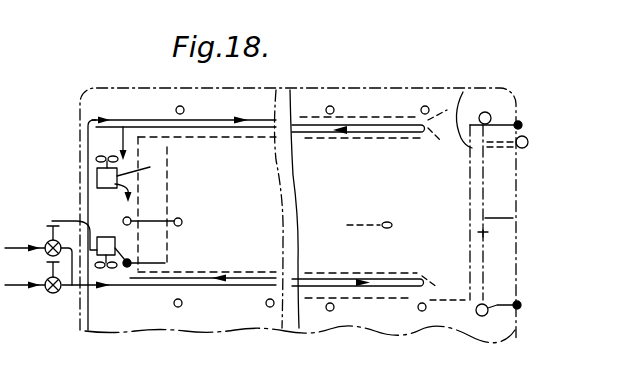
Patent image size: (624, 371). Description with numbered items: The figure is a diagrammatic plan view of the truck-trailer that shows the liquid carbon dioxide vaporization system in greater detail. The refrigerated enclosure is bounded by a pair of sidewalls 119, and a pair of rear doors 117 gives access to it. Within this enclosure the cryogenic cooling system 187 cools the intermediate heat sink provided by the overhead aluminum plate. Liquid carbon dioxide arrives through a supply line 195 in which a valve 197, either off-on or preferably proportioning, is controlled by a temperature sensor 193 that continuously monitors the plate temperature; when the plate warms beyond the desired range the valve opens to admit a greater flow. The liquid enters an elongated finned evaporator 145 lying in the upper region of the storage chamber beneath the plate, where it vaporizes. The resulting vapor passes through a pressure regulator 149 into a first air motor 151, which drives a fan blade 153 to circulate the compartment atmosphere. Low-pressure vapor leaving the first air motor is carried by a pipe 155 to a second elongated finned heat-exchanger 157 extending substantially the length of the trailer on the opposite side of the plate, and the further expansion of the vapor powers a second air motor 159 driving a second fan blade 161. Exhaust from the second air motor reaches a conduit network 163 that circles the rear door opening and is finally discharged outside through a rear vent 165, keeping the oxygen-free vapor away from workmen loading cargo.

The rear doors 117 is at (476, 236).
The sidewalls 119 is at (2, 106).
The elongated finned evaporator 145 is at (250, 276).
The pressure regulator 149 is at (130, 262).
The first air motor 151 is at (57, 227).
The fan blade 153 is at (125, 268).
The pipe 155 is at (96, 160).
The second elongated finned heat-exchanger 157 is at (257, 120).
The second air motor 159 is at (150, 167).
The second fan blade 161 is at (97, 105).
The conduit network 163 is at (471, 78).
The rear vent 165 is at (524, 136).
The cryogenic cooling system 187 is at (58, 203).
The temperature sensor 193 is at (388, 222).
The CO2 supply line 195 is at (60, 294).
The valve 197 is at (90, 330).